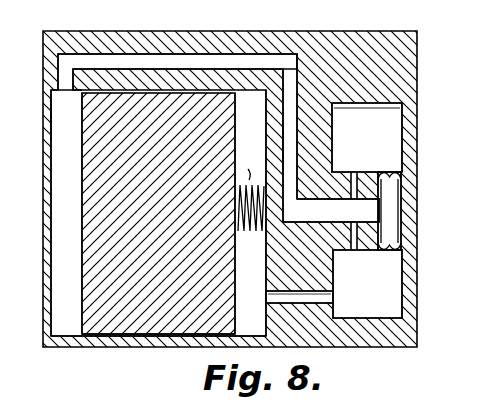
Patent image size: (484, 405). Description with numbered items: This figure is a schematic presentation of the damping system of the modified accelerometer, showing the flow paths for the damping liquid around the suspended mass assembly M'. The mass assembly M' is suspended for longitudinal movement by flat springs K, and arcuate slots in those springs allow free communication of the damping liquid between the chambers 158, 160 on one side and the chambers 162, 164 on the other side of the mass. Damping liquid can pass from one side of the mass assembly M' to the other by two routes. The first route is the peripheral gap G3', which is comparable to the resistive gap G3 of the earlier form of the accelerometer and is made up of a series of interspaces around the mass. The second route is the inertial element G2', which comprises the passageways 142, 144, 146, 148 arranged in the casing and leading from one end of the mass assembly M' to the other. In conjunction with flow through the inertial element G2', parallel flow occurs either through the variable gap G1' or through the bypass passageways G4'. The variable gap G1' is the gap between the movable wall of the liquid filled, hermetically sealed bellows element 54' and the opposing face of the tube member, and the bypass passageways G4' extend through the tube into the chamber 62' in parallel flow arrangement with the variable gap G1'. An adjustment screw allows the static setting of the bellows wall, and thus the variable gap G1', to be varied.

The passageway 142 is at (161, 67).
The passageway 144 is at (297, 98).
The passageway 146 is at (335, 218).
The passageway 148 is at (316, 300).
The mass assembly M' is at (158, 213).
The flat springs K is at (251, 189).
The variable gap G1' is at (383, 156).
The inertial element G2' is at (305, 145).
The resistive gap G3 is at (66, 115).
The peripheral gap G3' is at (158, 323).
The bypass passageways G4' is at (367, 137).
The bellows element 54' is at (389, 211).
The chamber 62' is at (367, 284).
The chamber 158 is at (75, 194).
The chamber 160 is at (75, 216).
The chamber 162 is at (258, 270).
The chamber 164 is at (258, 292).